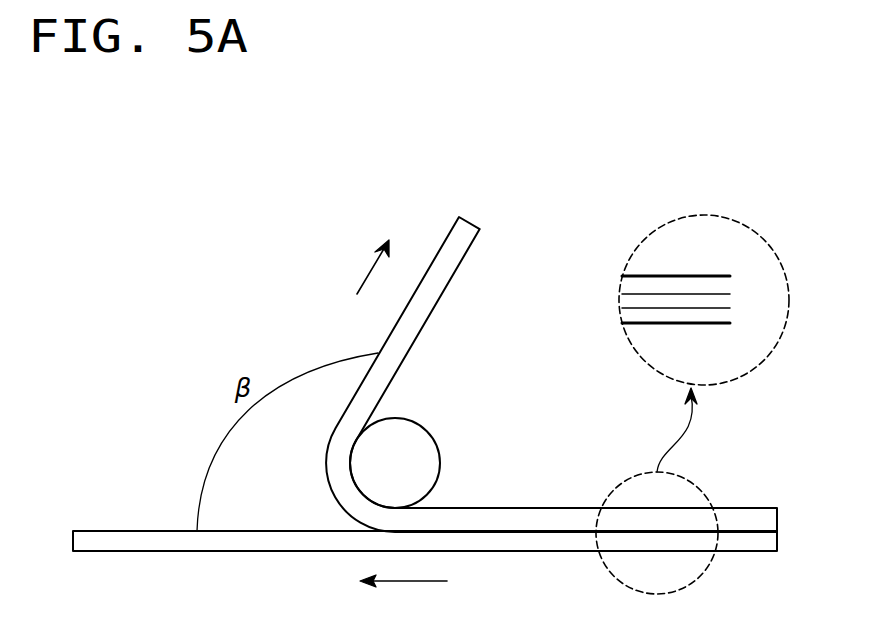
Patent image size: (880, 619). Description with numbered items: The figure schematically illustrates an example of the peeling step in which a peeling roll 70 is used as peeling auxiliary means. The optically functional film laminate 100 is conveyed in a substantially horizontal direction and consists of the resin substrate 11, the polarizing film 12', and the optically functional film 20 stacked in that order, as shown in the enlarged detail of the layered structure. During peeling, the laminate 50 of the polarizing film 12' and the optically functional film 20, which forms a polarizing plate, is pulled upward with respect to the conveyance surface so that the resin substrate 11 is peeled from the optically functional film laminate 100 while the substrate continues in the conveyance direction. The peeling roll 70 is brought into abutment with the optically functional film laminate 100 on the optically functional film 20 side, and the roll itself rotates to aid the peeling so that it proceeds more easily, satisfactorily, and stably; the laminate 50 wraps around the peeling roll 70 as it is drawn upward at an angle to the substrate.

The resin substrate 11 is at (150, 542).
The polarizing film 12' is at (703, 298).
The optically functional film 20 is at (683, 282).
The laminate (polarizing plate) 50 is at (455, 252).
The peeling roll 70 is at (417, 443).
The optically functional film laminate 100 is at (747, 505).